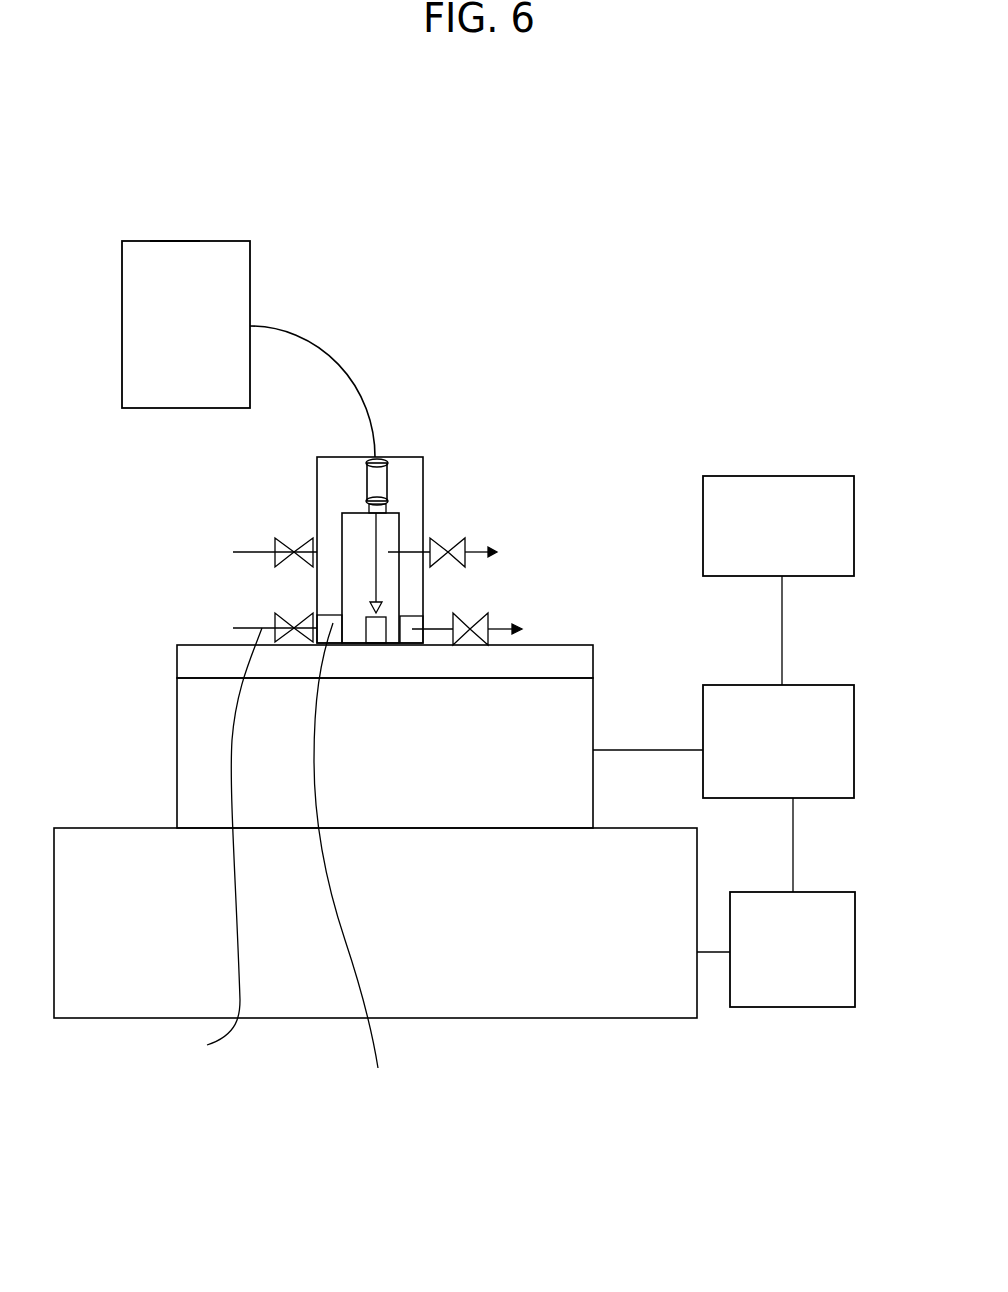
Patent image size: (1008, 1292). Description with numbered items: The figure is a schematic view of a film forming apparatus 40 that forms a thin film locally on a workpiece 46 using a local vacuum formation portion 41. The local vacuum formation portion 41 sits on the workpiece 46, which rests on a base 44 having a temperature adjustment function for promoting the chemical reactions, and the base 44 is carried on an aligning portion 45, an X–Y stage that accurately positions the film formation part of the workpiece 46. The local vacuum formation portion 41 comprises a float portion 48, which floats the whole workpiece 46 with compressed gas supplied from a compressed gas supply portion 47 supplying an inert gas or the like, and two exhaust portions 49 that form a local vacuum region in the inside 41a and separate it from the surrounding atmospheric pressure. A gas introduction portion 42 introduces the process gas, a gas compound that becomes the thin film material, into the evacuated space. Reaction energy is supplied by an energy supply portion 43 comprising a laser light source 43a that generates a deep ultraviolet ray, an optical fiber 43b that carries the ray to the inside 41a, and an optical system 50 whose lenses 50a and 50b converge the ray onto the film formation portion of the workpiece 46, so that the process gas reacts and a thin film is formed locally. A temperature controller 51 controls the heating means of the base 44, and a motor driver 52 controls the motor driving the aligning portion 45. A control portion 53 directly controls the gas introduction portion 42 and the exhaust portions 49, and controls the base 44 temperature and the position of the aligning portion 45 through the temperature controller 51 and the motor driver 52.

The film forming apparatus 40 is at (517, 372).
The local vacuum formation portion 41 is at (427, 593).
The inside of the local vacuum formation portion 41a is at (358, 587).
The gas introduction portion 42 is at (250, 552).
The energy supply portion 43 is at (216, 238).
The laser light source 43a is at (165, 240).
The optical fiber 43b is at (313, 336).
The base 44 is at (575, 722).
The aligning portion 45 is at (544, 982).
The workpiece 46 is at (562, 660).
The compressed gas supply portion 47 is at (218, 848).
The float portion 48 is at (353, 861).
The exhaust portion 49 is at (463, 538).
The optical system 50 is at (395, 478).
The lens 50a is at (392, 457).
The lens 50b is at (367, 491).
The temperature controller 51 is at (815, 685).
The motor driver 52 is at (790, 1007).
The control portion 53 is at (728, 476).